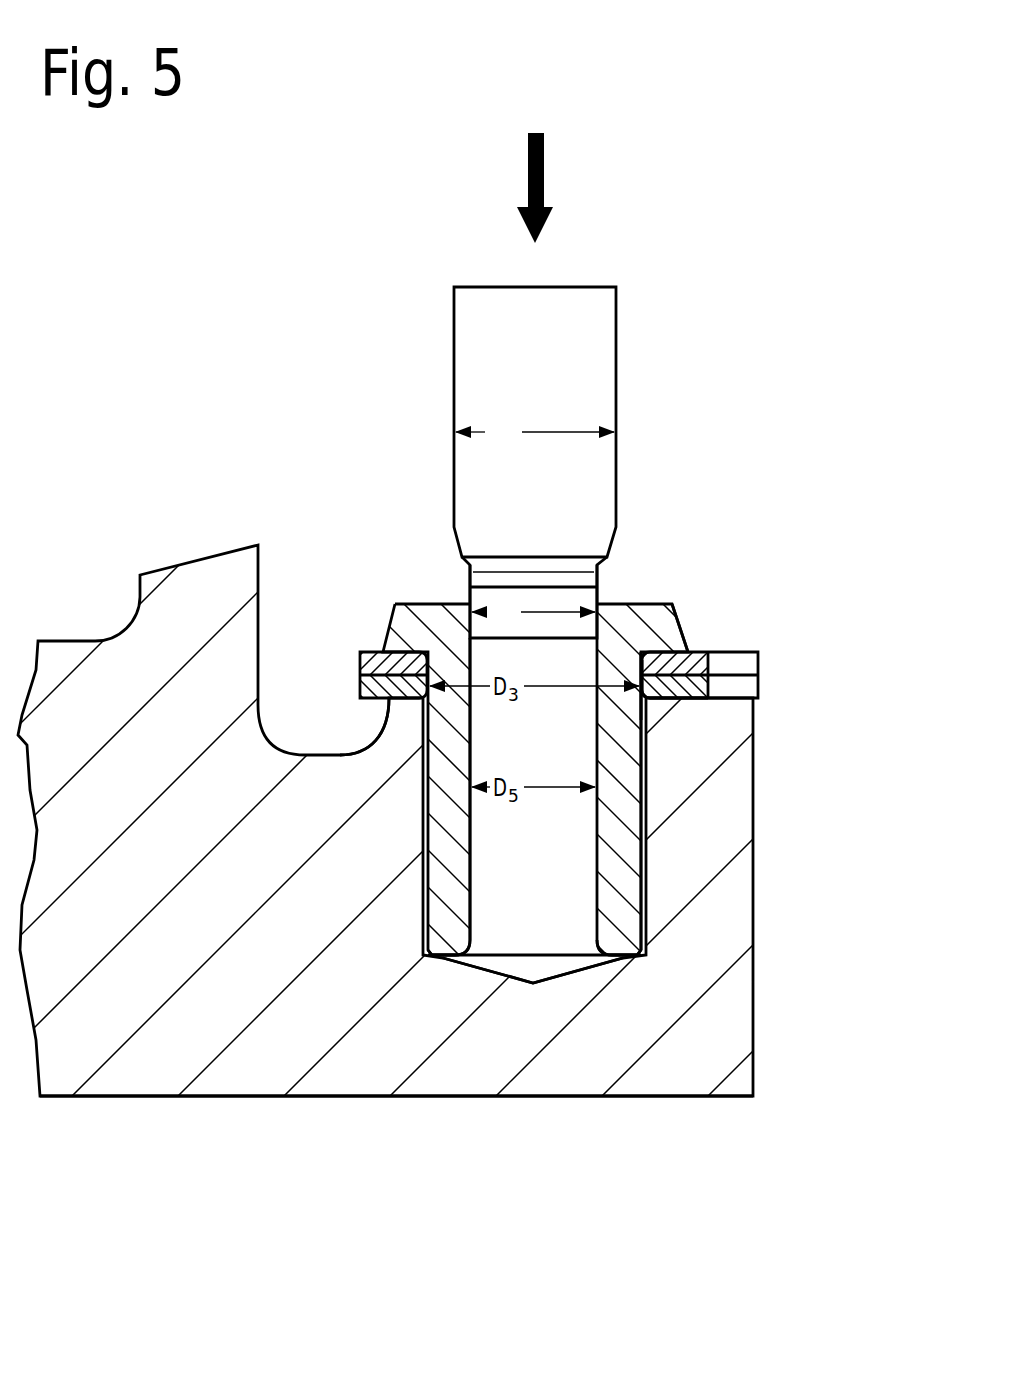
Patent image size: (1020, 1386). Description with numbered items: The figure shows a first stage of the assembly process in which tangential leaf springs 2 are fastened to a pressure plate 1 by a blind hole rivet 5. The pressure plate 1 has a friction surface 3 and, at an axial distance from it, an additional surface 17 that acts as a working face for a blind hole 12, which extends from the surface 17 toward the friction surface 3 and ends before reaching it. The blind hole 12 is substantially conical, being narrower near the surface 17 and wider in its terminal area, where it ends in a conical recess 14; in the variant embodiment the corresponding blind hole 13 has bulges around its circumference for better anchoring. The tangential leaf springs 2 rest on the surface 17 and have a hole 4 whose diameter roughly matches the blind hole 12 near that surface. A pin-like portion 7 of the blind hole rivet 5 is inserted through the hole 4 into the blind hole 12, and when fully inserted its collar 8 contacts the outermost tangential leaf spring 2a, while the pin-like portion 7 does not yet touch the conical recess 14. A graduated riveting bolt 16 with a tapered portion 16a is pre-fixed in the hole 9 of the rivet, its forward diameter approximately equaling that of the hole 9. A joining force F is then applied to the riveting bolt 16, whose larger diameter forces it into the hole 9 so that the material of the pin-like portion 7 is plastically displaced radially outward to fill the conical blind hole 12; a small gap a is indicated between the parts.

The pressure plate 1 is at (725, 1025).
The tangential leaf springs 2 is at (749, 641).
The outermost tangential leaf spring 2a is at (693, 648).
The friction surface 3 is at (273, 1101).
The hole 4 is at (658, 705).
The blind hole rivet 5 is at (651, 597).
The pin-like portion 7 is at (617, 880).
The collar 8 is at (672, 638).
The hole 9 is at (478, 897).
The blind hole 12 is at (413, 932).
The blind hole 13 is at (413, 932).
The conical recess 14 is at (555, 965).
The graduated riveting bolt 16 is at (590, 382).
The tapered portion 16a is at (459, 547).
The surface 17 is at (709, 699).
The joining force F is at (543, 200).
The gap a is at (530, 713).